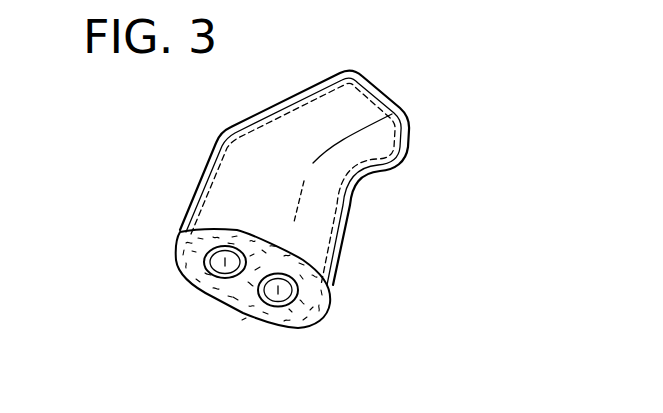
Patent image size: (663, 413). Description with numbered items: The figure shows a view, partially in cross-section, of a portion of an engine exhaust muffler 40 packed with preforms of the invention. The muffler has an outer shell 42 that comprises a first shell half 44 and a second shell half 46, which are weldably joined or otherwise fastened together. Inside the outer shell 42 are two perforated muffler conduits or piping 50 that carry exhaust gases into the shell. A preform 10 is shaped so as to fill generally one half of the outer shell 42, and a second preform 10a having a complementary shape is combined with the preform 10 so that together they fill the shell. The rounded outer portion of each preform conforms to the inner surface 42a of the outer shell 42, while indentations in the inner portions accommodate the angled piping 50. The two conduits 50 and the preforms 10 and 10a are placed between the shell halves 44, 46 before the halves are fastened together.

The preform 10 is at (233, 295).
The second preform 10a is at (255, 262).
The engine exhaust muffler 40 is at (165, 160).
The outer shell 42 is at (390, 128).
The inner surface 42a is at (230, 313).
The first shell half 44 is at (300, 243).
The second shell half 46 is at (173, 253).
The perforated muffler conduits 50 is at (215, 274).